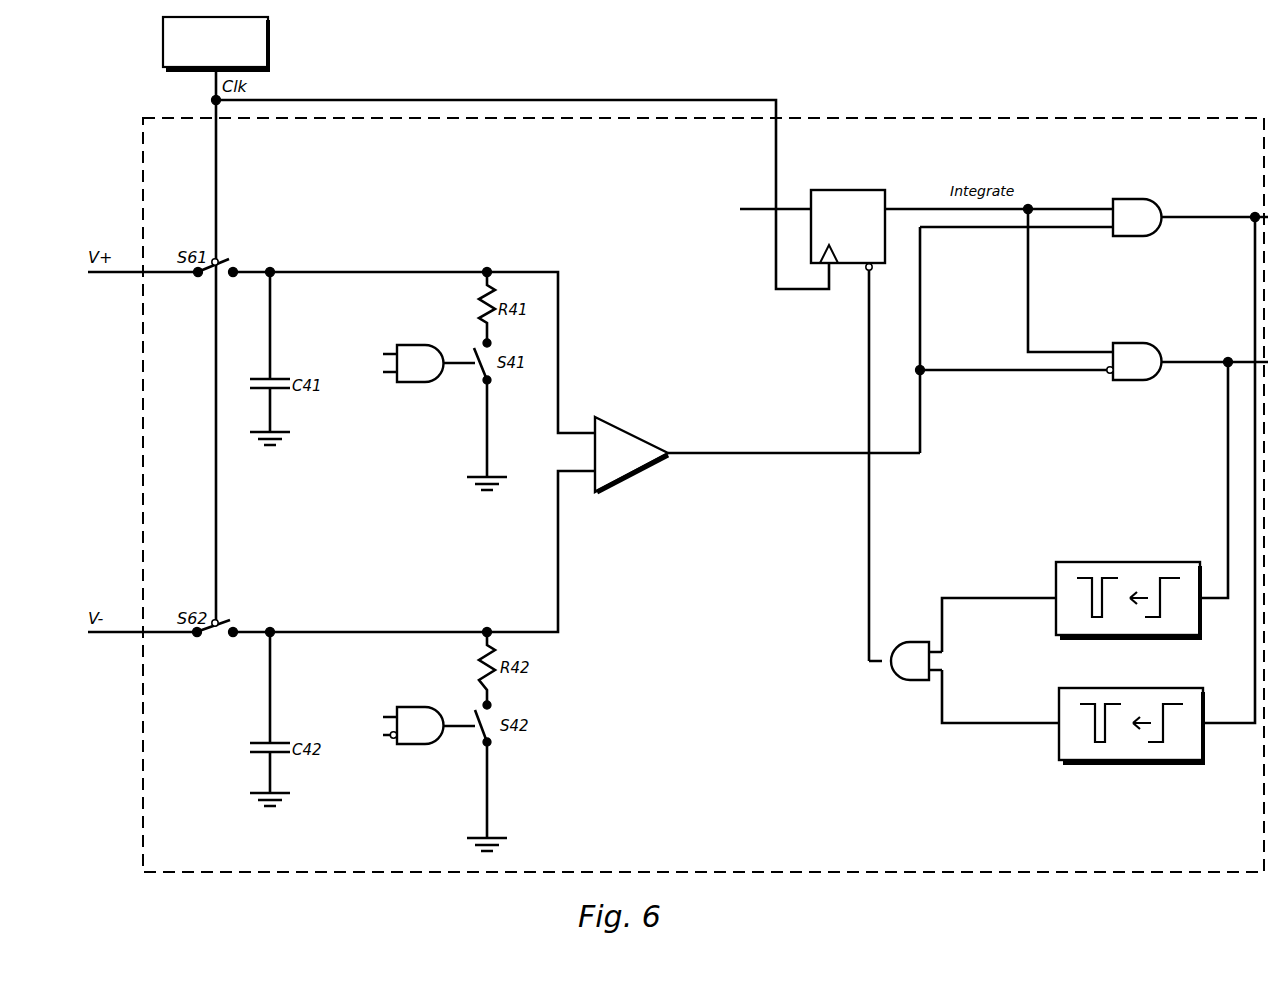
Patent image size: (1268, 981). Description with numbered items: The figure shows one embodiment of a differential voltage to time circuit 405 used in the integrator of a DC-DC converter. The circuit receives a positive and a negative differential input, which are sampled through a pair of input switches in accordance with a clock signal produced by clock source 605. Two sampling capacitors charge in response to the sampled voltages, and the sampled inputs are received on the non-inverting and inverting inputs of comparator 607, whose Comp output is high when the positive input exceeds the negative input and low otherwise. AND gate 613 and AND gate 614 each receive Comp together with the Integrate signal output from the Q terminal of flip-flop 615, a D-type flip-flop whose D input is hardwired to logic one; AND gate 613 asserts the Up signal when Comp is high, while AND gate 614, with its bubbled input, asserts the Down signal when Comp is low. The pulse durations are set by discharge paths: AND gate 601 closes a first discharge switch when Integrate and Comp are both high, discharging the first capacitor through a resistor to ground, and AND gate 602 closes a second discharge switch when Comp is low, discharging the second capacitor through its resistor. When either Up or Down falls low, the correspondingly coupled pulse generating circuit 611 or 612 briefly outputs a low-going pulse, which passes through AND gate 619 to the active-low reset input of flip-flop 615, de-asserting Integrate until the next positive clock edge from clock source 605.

The clock source 605 is at (215, 43).
The differential voltage to time circuit 405 is at (848, 116).
The AND gate 601 is at (420, 340).
The AND gate 602 is at (420, 703).
The comparator 607 is at (630, 418).
The flip-flop 615 is at (836, 190).
The AND gate 613 is at (1128, 196).
The AND gate 614 is at (1125, 340).
The AND gate 619 is at (912, 690).
The pulse generating circuit 611 is at (1095, 550).
The pulse generating circuit 612 is at (1105, 770).